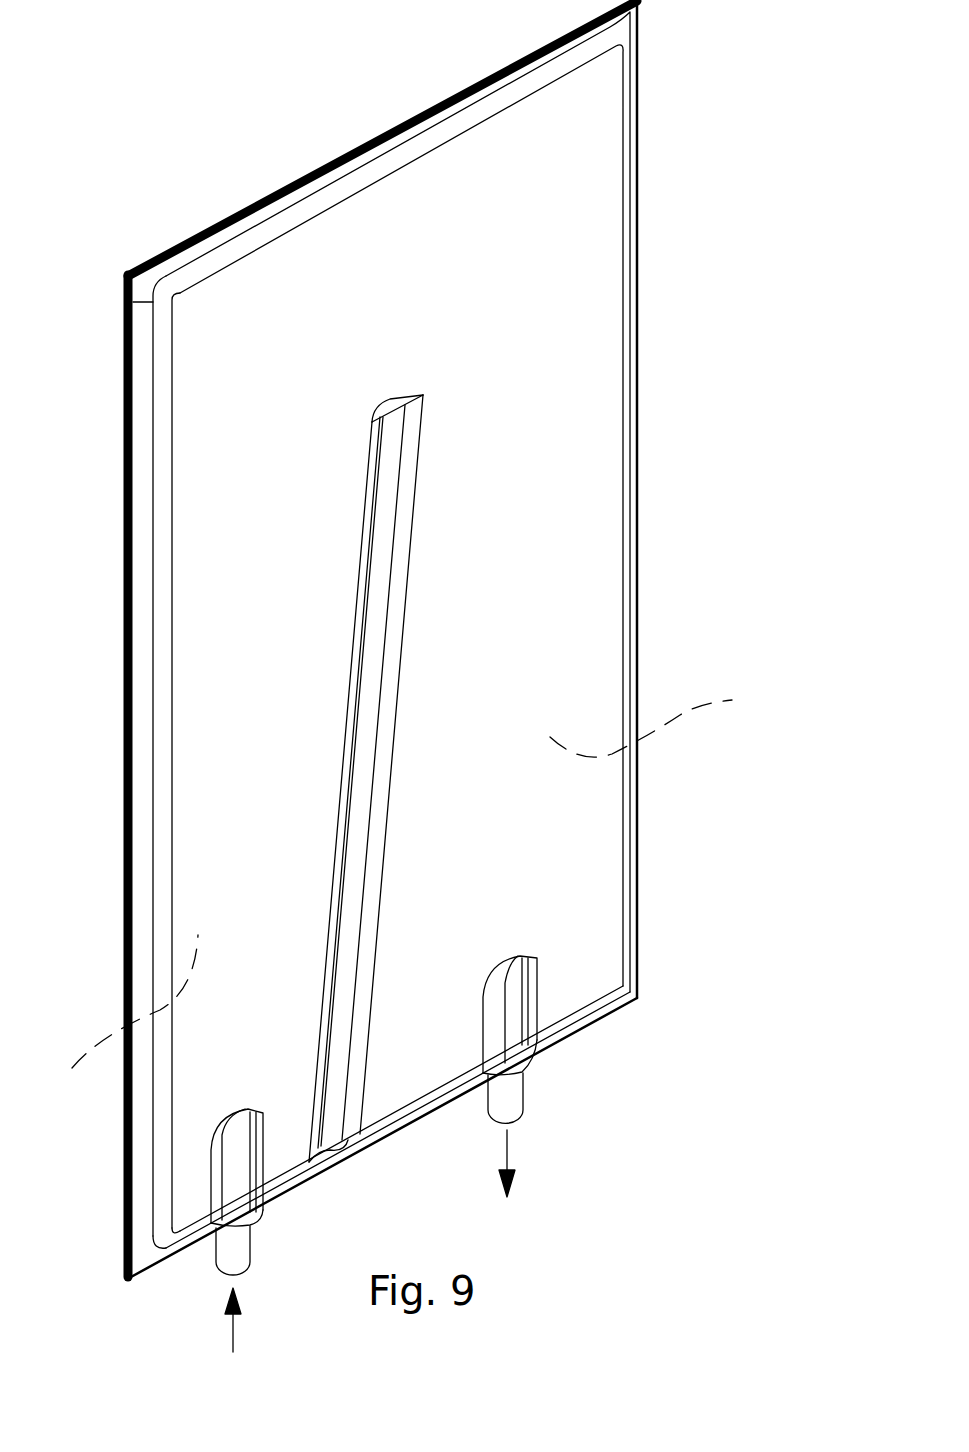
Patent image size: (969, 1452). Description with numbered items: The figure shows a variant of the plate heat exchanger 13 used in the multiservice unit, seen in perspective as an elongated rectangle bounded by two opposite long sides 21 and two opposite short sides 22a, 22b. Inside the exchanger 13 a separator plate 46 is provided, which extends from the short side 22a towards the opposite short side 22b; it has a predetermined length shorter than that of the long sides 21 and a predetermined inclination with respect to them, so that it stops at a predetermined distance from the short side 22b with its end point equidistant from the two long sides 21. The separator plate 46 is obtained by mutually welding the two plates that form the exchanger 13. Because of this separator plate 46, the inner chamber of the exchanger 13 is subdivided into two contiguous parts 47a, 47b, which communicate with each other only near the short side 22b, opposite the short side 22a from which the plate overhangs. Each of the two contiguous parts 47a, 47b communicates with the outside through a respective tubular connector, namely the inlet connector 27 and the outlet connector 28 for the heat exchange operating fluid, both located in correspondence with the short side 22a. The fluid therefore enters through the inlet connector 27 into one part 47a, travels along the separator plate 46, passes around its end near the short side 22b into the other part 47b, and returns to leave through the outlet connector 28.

The plate exchanger 13 is at (418, 638).
The long sides 21 is at (640, 462).
The short side 22a is at (408, 1120).
The short side 22b is at (310, 172).
The inlet connector 27 is at (237, 1243).
The outlet connector 28 is at (526, 1100).
The separator plate 46 is at (395, 528).
The contiguous part 47a is at (117, 1019).
The contiguous part 47b is at (673, 715).